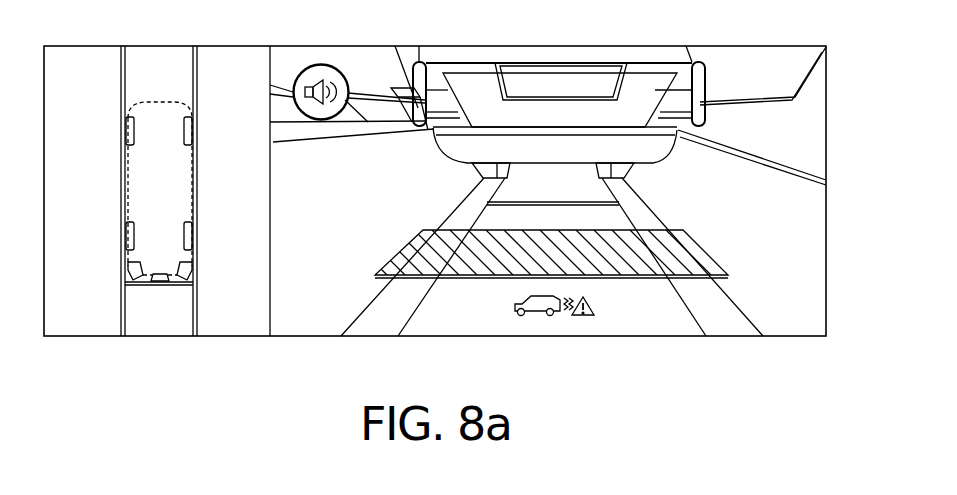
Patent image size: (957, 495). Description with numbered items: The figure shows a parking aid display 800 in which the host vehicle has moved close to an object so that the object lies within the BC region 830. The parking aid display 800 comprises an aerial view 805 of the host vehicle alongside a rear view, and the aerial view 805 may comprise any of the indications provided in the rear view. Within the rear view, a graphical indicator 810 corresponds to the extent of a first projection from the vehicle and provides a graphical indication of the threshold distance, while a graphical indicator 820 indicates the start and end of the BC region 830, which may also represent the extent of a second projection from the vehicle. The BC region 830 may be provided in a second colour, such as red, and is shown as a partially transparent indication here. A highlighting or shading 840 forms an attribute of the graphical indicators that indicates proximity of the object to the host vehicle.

The parking aid display 800 is at (808, 135).
The aerial view 805 is at (233, 323).
The graphical indicator 810 is at (737, 270).
The graphical indicator 820 is at (658, 223).
The BC region 830 is at (160, 292).
The highlighting or shading 840 is at (513, 304).